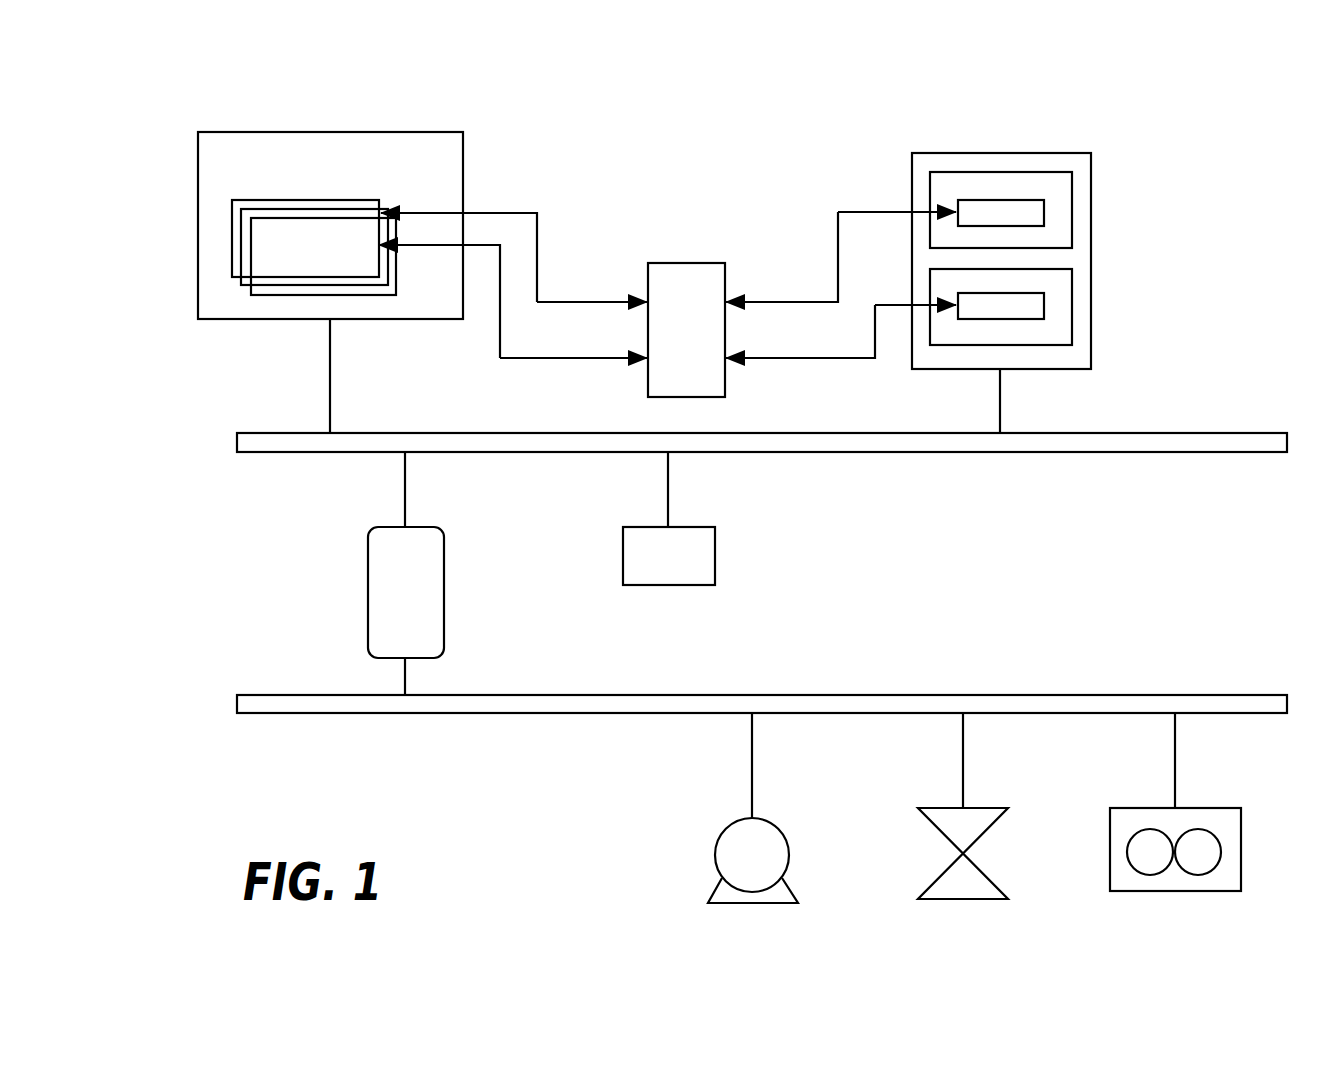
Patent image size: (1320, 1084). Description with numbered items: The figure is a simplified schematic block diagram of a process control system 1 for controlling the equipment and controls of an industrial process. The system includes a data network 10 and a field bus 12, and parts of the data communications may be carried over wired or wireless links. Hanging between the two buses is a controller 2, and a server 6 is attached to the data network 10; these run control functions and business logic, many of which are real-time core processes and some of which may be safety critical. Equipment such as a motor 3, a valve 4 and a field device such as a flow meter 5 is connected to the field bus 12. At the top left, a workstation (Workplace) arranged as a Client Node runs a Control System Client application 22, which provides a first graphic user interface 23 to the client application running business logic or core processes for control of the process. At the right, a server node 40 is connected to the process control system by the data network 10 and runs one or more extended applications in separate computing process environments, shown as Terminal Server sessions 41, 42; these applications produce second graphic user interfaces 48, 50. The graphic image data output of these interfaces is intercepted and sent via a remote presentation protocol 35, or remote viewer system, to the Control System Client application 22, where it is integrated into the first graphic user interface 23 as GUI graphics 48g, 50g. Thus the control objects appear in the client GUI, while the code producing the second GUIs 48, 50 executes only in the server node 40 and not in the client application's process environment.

The process control system 1 is at (390, 84).
The Control System Client application 22 is at (198, 183).
The first graphic user interface 23 is at (232, 209).
The integrated GUI graphics of second graphic user interface 48g is at (241, 257).
The integrated GUI graphics of second graphic user interface 50g is at (259, 287).
The remote presentation protocol 35 is at (682, 262).
The server node 40 is at (1091, 172).
The Terminal Server session 41 is at (929, 182).
The Terminal Server session 42 is at (985, 320).
The second graphic user interface 48 is at (1045, 207).
The second graphic user interface 50 is at (1045, 308).
The data network 10 is at (1158, 432).
The controller 2 is at (368, 555).
The server 6 is at (715, 550).
The field bus 12 is at (1210, 696).
The motor 3 is at (716, 852).
The valve 4 is at (952, 902).
The flow meter 5 is at (1151, 891).